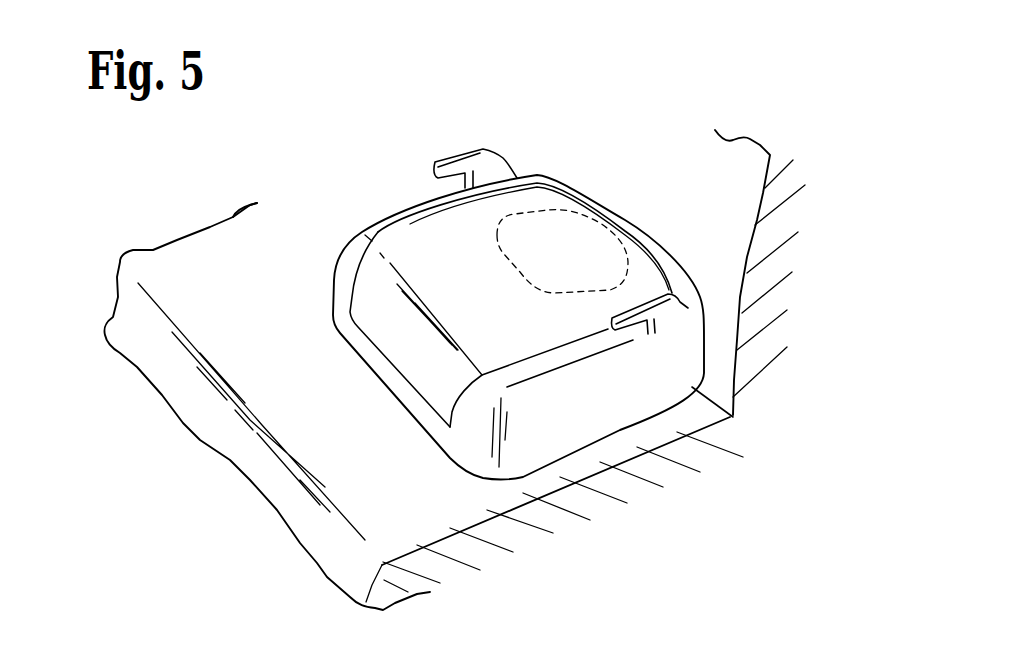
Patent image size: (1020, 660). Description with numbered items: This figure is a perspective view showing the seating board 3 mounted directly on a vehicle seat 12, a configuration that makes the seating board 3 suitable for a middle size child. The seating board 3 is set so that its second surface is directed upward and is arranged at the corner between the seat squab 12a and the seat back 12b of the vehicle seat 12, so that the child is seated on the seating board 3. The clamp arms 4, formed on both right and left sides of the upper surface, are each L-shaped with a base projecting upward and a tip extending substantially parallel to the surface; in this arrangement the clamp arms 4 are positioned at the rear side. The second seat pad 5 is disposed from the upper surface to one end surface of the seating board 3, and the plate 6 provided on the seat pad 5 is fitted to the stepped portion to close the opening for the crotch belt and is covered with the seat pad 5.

The seating board 3 is at (594, 190).
The clamp arms 4 is at (492, 153).
The second seat pad 5 is at (403, 237).
The plate 6 is at (617, 222).
The vehicle seat 12 is at (142, 232).
The seat squab 12a is at (260, 236).
The seat back 12b is at (747, 197).